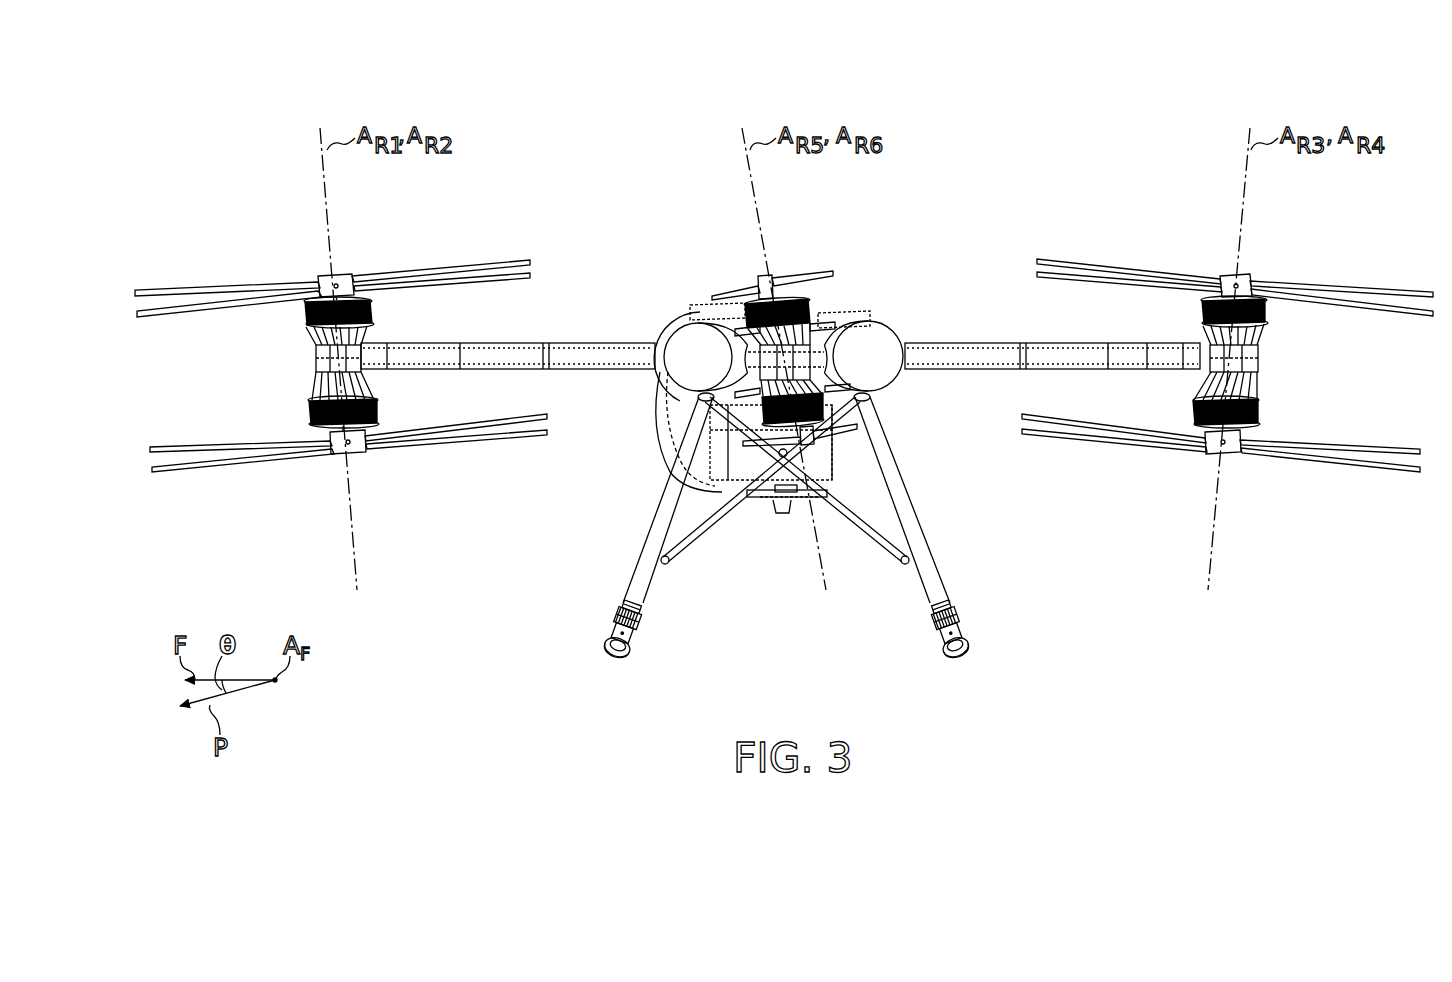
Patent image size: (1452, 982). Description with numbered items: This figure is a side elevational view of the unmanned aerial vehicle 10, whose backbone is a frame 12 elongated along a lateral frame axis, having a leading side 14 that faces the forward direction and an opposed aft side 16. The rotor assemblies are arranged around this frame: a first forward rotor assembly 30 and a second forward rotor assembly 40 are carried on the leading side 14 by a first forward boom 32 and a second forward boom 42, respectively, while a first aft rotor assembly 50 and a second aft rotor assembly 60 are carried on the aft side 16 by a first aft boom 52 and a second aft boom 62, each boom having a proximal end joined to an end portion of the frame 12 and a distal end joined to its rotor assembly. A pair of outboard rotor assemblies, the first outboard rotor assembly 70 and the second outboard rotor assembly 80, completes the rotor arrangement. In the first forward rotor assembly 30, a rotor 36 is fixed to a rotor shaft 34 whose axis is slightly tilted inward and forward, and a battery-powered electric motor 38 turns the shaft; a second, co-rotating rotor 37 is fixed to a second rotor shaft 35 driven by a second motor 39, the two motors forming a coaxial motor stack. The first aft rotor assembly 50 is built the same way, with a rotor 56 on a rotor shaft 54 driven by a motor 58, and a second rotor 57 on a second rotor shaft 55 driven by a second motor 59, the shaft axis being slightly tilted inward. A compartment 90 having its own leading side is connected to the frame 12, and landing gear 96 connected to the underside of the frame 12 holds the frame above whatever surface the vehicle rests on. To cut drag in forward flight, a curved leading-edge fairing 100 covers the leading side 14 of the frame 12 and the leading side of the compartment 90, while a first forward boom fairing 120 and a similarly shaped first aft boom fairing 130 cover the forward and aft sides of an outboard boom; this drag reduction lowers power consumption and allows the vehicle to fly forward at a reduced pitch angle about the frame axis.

The unmanned aerial vehicle 10 is at (1006, 94).
The frame 12 is at (833, 312).
The leading side 14 is at (719, 498).
The aft side 16 is at (859, 498).
The first forward rotor assembly 30 is at (341, 343).
The second forward rotor assembly 40 is at (341, 369).
The first forward boom 32 is at (508, 332).
The second forward boom 42 is at (572, 325).
The rotor shaft 34 is at (334, 274).
The second rotor shaft 35 is at (358, 454).
The rotor 36 is at (455, 268).
The second rotor 37 is at (256, 466).
The motor 38 is at (306, 313).
The second motor 39 is at (312, 414).
The first aft rotor assembly 50 is at (1227, 346).
The second aft rotor assembly 60 is at (1227, 376).
The first aft boom 52 is at (1052, 332).
The second aft boom 62 is at (1019, 344).
The rotor shaft 54 is at (1246, 275).
The second rotor shaft 55 is at (1226, 454).
The rotor 56 is at (1398, 288).
The second rotor 57 is at (1355, 470).
The motor 58 is at (1266, 313).
The second motor 59 is at (1258, 414).
The first outboard rotor assembly 70 is at (785, 358).
The second outboard rotor assembly 80 is at (791, 407).
The compartment 90 is at (810, 490).
The landing gear 96 is at (628, 643).
The curved leading-edge fairing 100 is at (667, 420).
The first forward boom fairing 120 is at (692, 340).
The first aft boom fairing 130 is at (893, 337).